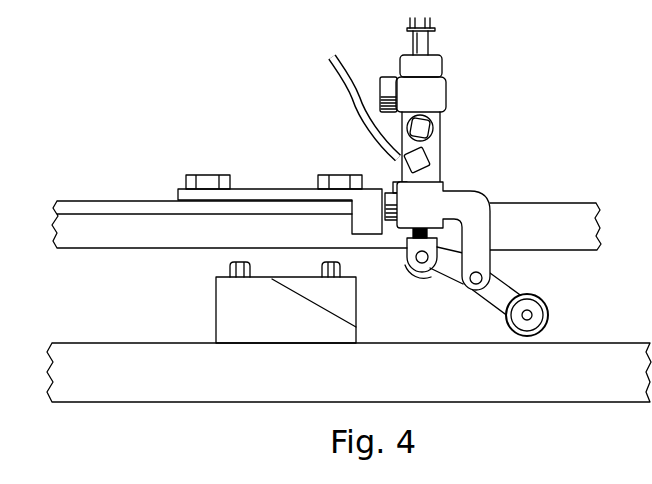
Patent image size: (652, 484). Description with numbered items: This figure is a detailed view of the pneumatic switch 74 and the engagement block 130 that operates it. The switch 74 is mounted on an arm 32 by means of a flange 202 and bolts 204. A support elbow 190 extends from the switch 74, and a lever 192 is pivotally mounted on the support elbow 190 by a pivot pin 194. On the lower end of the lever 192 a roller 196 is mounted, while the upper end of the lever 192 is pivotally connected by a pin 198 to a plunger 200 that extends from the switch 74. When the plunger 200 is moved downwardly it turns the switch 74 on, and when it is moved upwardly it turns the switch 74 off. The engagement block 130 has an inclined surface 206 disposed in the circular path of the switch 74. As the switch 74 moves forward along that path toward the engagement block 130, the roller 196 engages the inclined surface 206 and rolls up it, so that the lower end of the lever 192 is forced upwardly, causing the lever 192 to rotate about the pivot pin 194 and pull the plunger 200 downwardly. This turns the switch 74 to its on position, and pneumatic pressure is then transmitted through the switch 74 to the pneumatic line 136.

The arm 32 is at (137, 200).
The switch 74 is at (445, 138).
The engagement block 130 is at (236, 304).
The pneumatic line 136 is at (358, 113).
The support elbow 190 is at (481, 204).
The lever 192 is at (506, 289).
The pivot pin 194 is at (469, 288).
The roller 196 is at (544, 307).
The pin 198 is at (427, 265).
The plunger 200 is at (402, 237).
The flange 202 is at (270, 188).
The bolts 204 is at (207, 175).
The inclined surface 206 is at (318, 294).